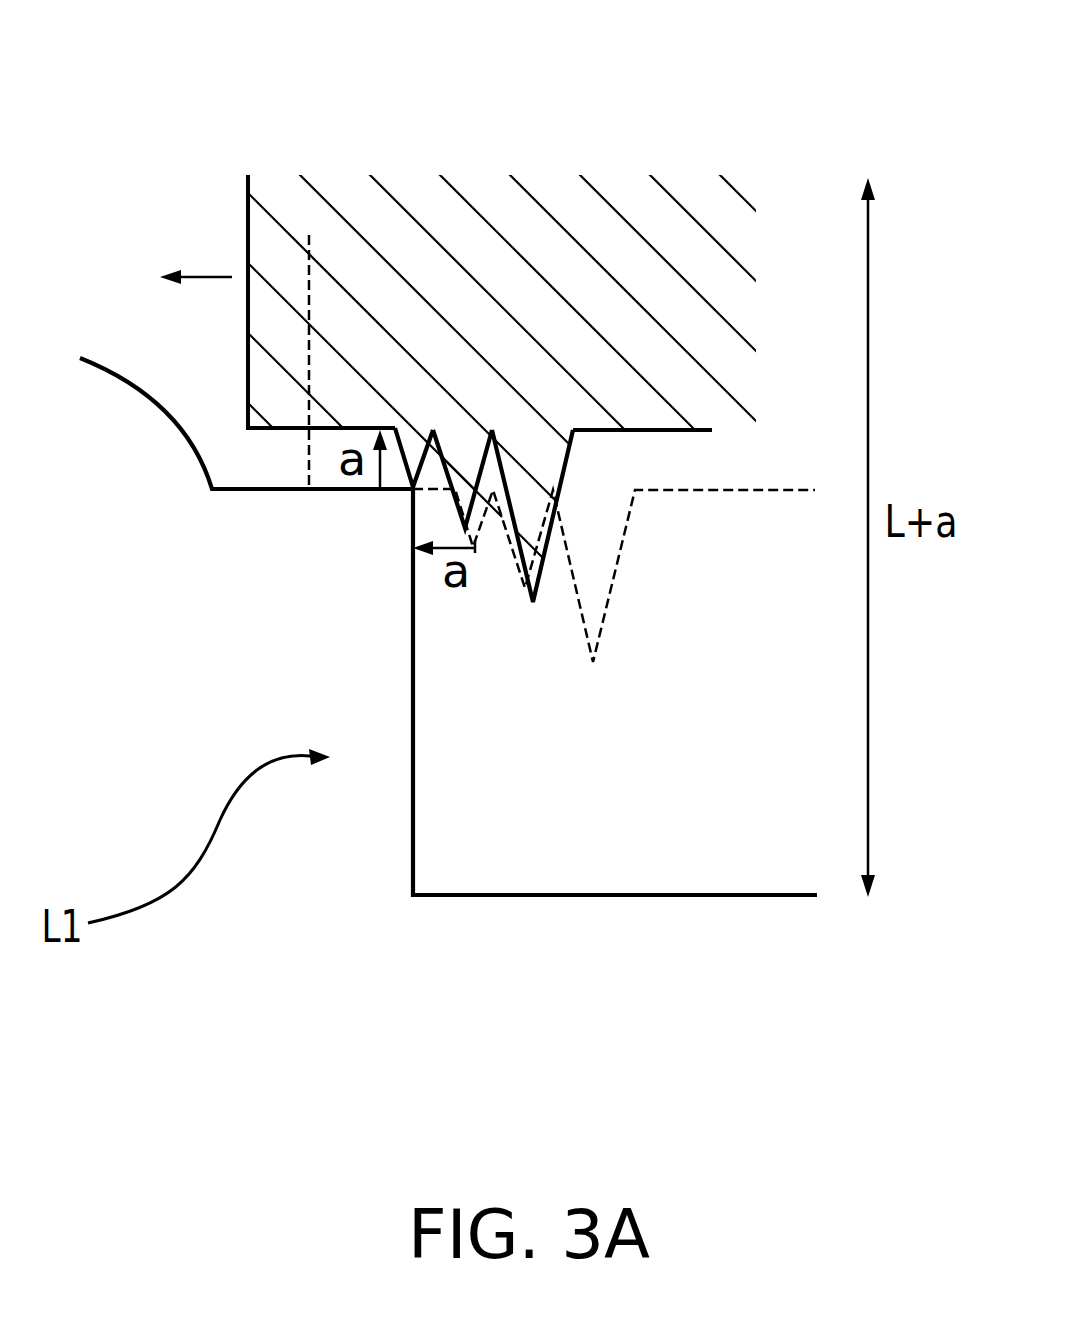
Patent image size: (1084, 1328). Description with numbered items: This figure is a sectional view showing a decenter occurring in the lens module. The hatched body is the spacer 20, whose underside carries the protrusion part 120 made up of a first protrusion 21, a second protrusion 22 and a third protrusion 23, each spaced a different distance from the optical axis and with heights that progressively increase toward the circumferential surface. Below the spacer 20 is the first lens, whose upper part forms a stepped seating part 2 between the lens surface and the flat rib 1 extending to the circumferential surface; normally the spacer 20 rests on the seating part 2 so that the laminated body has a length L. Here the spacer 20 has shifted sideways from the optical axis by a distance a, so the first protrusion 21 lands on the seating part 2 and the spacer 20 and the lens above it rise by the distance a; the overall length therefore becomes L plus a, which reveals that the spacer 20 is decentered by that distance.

The spacer 20 is at (549, 542).
The first protrusion 21 is at (416, 492).
The second protrusion 22 is at (473, 497).
The third protrusion 23 is at (533, 604).
The protrusion part 120 is at (530, 754).
The seating part 2 is at (278, 515).
The rib 1 is at (743, 913).